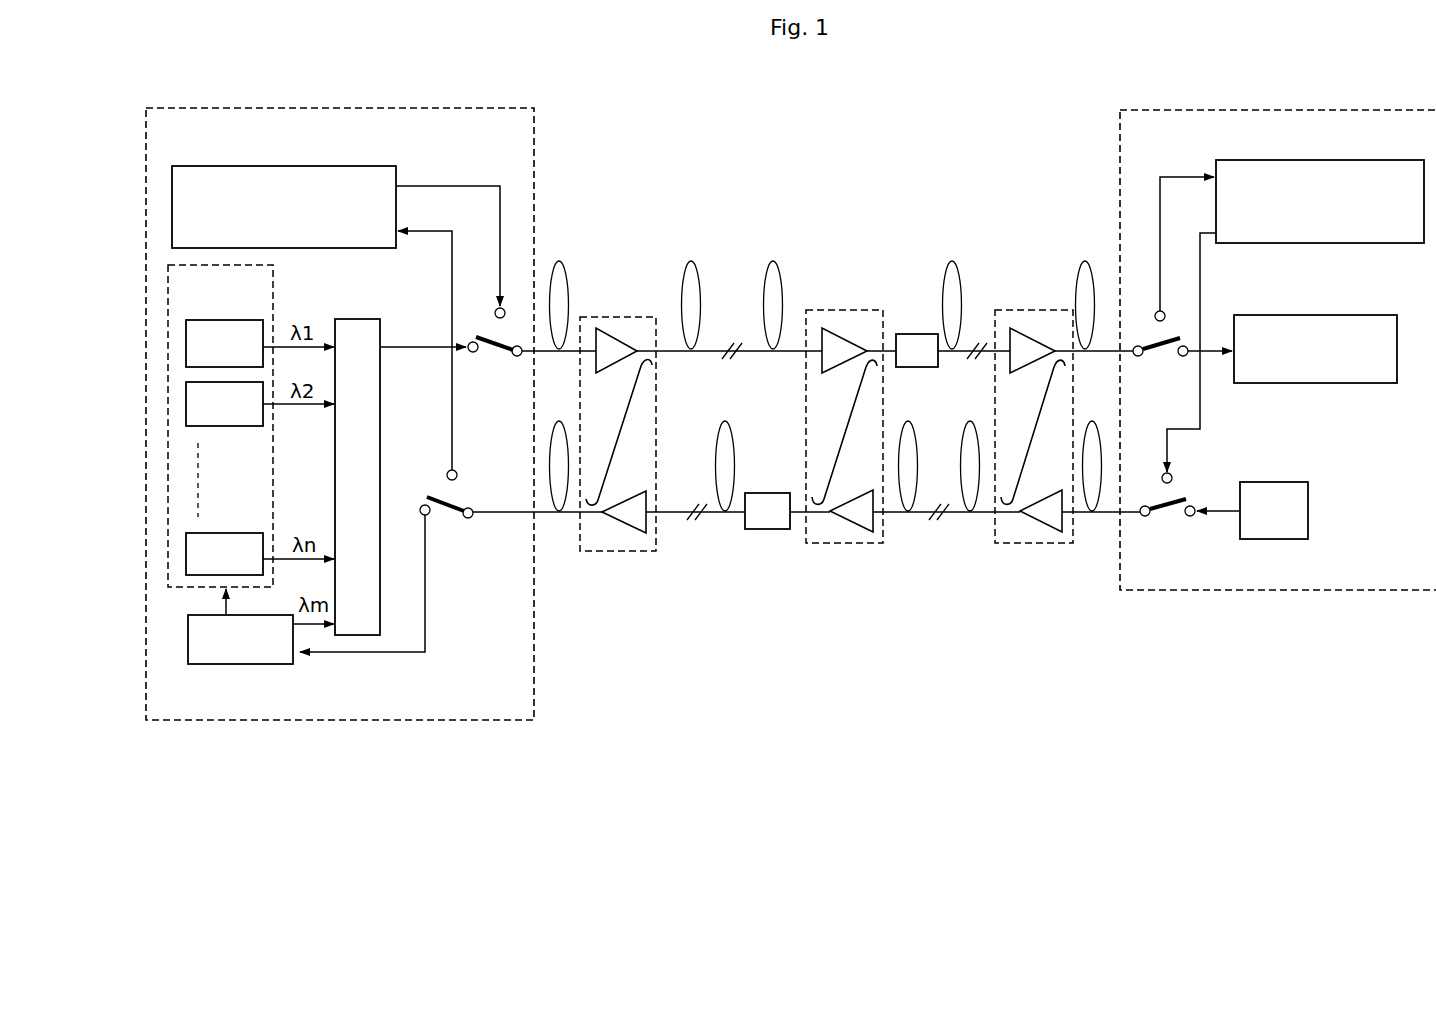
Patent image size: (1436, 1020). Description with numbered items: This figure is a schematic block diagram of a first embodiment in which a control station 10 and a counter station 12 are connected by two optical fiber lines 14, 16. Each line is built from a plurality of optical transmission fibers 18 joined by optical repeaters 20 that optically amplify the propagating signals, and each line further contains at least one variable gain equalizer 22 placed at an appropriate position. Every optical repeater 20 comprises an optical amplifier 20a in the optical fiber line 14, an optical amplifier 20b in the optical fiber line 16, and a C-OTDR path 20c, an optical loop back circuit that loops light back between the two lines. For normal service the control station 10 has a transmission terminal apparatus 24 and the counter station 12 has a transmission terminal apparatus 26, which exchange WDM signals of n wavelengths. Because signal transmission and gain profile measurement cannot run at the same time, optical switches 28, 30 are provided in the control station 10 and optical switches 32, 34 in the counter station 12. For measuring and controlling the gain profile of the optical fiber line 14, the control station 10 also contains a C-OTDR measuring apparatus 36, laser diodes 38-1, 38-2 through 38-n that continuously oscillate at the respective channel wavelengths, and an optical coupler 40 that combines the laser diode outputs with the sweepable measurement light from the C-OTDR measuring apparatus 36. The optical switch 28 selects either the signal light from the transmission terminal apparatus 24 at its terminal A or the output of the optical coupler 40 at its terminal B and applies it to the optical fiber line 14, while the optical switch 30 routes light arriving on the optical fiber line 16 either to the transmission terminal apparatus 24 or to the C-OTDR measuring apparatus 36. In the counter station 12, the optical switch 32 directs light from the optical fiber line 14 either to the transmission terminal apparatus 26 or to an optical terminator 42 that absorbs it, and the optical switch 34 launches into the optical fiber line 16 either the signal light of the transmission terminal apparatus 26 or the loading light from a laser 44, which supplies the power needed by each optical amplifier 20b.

The control station 10 is at (520, 137).
The counter station 12 is at (1127, 170).
The optical fiber line 14 is at (732, 283).
The optical fiber line 16 is at (716, 526).
The optical transmission fiber 18 is at (565, 272).
The optical repeater 20 is at (826, 439).
The optical amplifier 20a is at (613, 347).
The optical amplifier 20b is at (631, 518).
The C-OTDR path 20c is at (642, 433).
The variable gain equalizer 22 is at (768, 530).
The transmission terminal apparatus 24 is at (379, 167).
The transmission terminal apparatus 26 is at (1400, 168).
The optical switch 28 is at (497, 357).
The optical switch 30 is at (449, 518).
The optical switch 32 is at (1160, 356).
The optical switch 34 is at (1167, 517).
The C-OTDR measuring apparatus 36 is at (236, 665).
The laser diode 38-1 is at (222, 320).
The laser diode 38-2 is at (241, 427).
The laser diode 38-n is at (250, 536).
The optical coupler 40 is at (380, 409).
The optical terminator 42 is at (1366, 330).
The laser 44 is at (1283, 490).